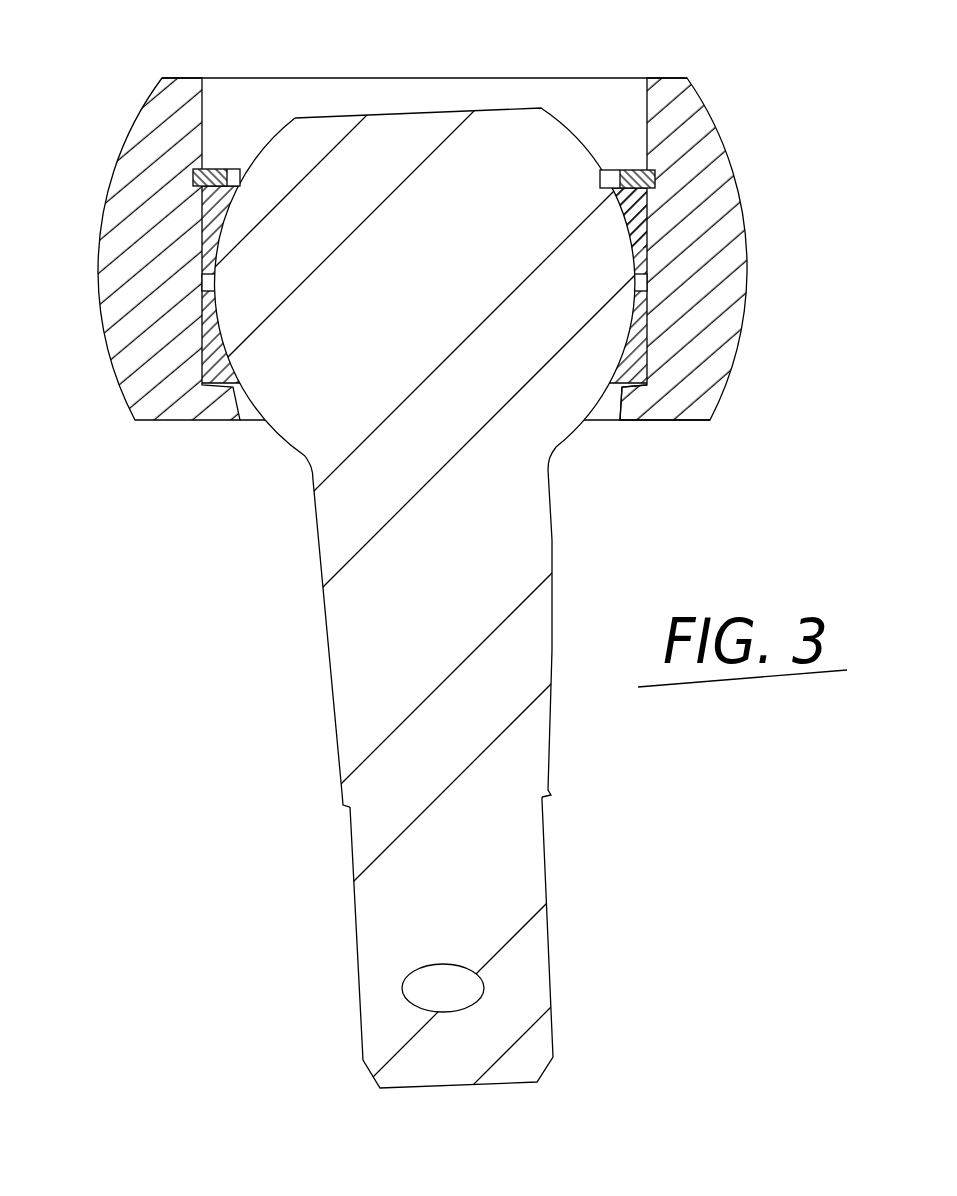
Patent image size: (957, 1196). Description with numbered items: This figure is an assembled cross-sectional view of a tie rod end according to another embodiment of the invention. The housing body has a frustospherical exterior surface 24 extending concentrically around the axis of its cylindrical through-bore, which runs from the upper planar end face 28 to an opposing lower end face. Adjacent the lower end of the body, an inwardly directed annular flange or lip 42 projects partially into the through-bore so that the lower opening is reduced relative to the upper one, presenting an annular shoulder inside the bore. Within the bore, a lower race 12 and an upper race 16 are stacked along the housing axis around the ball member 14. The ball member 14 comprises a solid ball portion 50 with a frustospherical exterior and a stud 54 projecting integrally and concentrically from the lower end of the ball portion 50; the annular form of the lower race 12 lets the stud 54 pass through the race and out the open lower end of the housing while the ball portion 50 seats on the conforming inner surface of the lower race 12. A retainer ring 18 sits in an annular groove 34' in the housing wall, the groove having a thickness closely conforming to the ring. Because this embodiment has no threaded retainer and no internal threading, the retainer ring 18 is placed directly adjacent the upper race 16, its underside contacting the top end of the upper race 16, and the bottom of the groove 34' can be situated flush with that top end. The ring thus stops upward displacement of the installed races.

The lower race 12 is at (637, 340).
The ball member 14 is at (560, 568).
The upper race 16 is at (638, 210).
The retainer ring 18 is at (622, 172).
The frustospherical exterior surface 24 is at (748, 229).
The upper planar end face 28 is at (178, 78).
The annular groove 34' is at (146, 148).
The annular flange or lip 42 is at (627, 414).
The ball portion 50 is at (308, 390).
The stud 54 is at (520, 806).